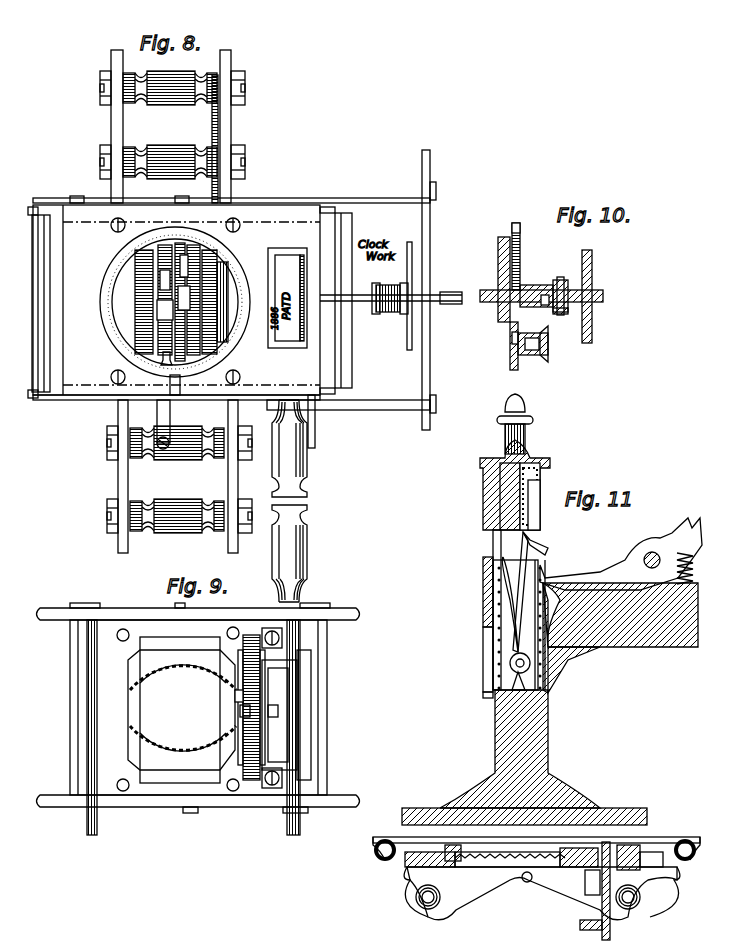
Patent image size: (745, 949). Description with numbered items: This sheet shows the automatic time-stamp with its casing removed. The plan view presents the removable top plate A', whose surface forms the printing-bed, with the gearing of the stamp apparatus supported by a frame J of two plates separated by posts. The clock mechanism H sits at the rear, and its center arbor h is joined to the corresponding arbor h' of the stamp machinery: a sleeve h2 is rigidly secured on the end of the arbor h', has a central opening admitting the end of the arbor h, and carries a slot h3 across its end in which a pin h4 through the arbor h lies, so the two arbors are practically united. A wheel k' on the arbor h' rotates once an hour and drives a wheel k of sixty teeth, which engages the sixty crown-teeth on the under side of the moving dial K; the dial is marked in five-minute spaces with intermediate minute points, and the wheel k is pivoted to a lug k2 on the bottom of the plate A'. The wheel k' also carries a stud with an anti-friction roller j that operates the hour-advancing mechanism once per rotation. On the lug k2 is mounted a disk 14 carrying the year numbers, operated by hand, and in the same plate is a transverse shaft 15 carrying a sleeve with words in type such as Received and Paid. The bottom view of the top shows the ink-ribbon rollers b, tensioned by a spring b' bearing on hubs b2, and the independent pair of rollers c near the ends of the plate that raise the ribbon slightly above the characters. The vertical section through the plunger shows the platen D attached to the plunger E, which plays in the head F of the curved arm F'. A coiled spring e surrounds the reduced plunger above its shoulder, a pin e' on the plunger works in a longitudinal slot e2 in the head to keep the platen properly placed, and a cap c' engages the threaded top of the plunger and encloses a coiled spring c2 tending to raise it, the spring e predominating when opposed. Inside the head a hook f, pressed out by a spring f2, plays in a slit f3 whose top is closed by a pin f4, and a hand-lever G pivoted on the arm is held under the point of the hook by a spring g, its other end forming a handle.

In FIG. 8, the removable top plate A' is at (229, 304).
In FIG. 8, the wheel of sixty teeth k is at (181, 311).
In FIG. 9, the wheel of sixty teeth k is at (231, 707).
In FIG. 8, the center arbor h is at (391, 303).
In FIG. 10, the center arbor h is at (551, 293).
In FIG. 8, the clock mechanism H is at (426, 290).
In FIG. 10, the clock mechanism H is at (592, 272).
In FIG. 8, the frame J is at (128, 480).
In FIG. 8, the transverse shaft 15 is at (279, 402).
In FIG. 9, the spring b' is at (193, 714).
In FIG. 9, the hubs b2 is at (198, 702).
In FIG. 9, the moving dial K is at (182, 710).
In FIG. 9, the lug k2 is at (258, 636).
In FIG. 9, the disk 14 is at (272, 693).
In FIG. 10, the arbor h' is at (500, 274).
In FIG. 10, the sleeve h2 is at (557, 283).
In FIG. 10, the slot h3 is at (562, 315).
In FIG. 10, the pin h4 is at (550, 308).
In FIG. 10, the wheel k' is at (526, 346).
In FIG. 10, the anti-friction roller j is at (540, 358).
In FIG. 11, the cap c' is at (523, 424).
In FIG. 11, the coiled spring c2 is at (550, 460).
In FIG. 11, the pin f4 is at (538, 498).
In FIG. 11, the slit f3 is at (546, 545).
In FIG. 11, the hook f is at (524, 589).
In FIG. 11, the spring f2 is at (516, 612).
In FIG. 11, the curved arm F' is at (498, 611).
In FIG. 11, the head F is at (620, 638).
In FIG. 11, the hand-lever G is at (621, 554).
In FIG. 11, the spring g is at (690, 568).
In FIG. 11, the longitudinal slot e2 is at (490, 655).
In FIG. 11, the coiled spring e is at (490, 677).
In FIG. 11, the pin e' is at (479, 706).
In FIG. 11, the plunger E is at (548, 733).
In FIG. 11, the platen D is at (425, 812).
In FIG. 11, the rollers c is at (541, 853).
In FIG. 11, the rollers b is at (542, 891).